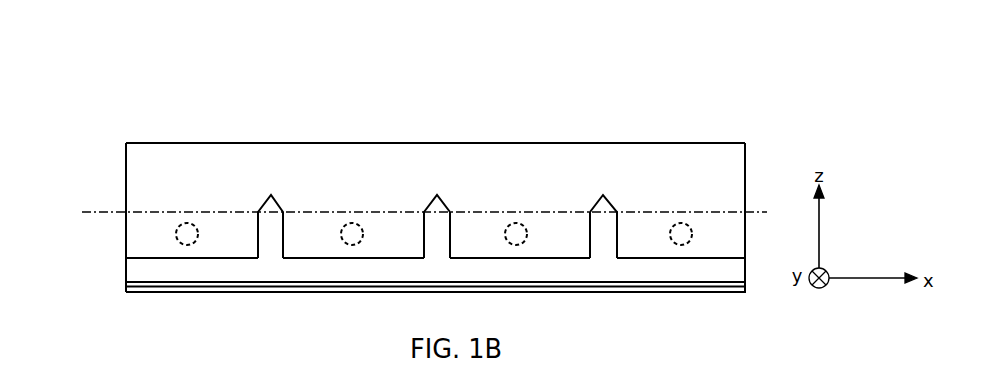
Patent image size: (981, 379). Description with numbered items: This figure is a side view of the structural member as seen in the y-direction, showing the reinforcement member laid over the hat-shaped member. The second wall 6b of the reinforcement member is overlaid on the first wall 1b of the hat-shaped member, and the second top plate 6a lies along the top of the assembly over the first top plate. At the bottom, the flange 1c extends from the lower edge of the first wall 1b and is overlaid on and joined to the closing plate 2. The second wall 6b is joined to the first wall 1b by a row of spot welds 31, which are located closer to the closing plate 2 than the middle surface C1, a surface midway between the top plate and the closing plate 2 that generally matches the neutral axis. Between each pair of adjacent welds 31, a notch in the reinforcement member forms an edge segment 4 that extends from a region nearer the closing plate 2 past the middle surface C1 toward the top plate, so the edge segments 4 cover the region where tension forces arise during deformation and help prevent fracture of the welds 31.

The second top plate 6a is at (305, 143).
The second wall 6b is at (147, 170).
The first wall 1b is at (127, 266).
The flange 1c is at (127, 284).
The closing plate 2 is at (127, 292).
The edge segment 4 is at (279, 230).
The weld 31 is at (189, 222).
The middle surface C1 is at (441, 216).